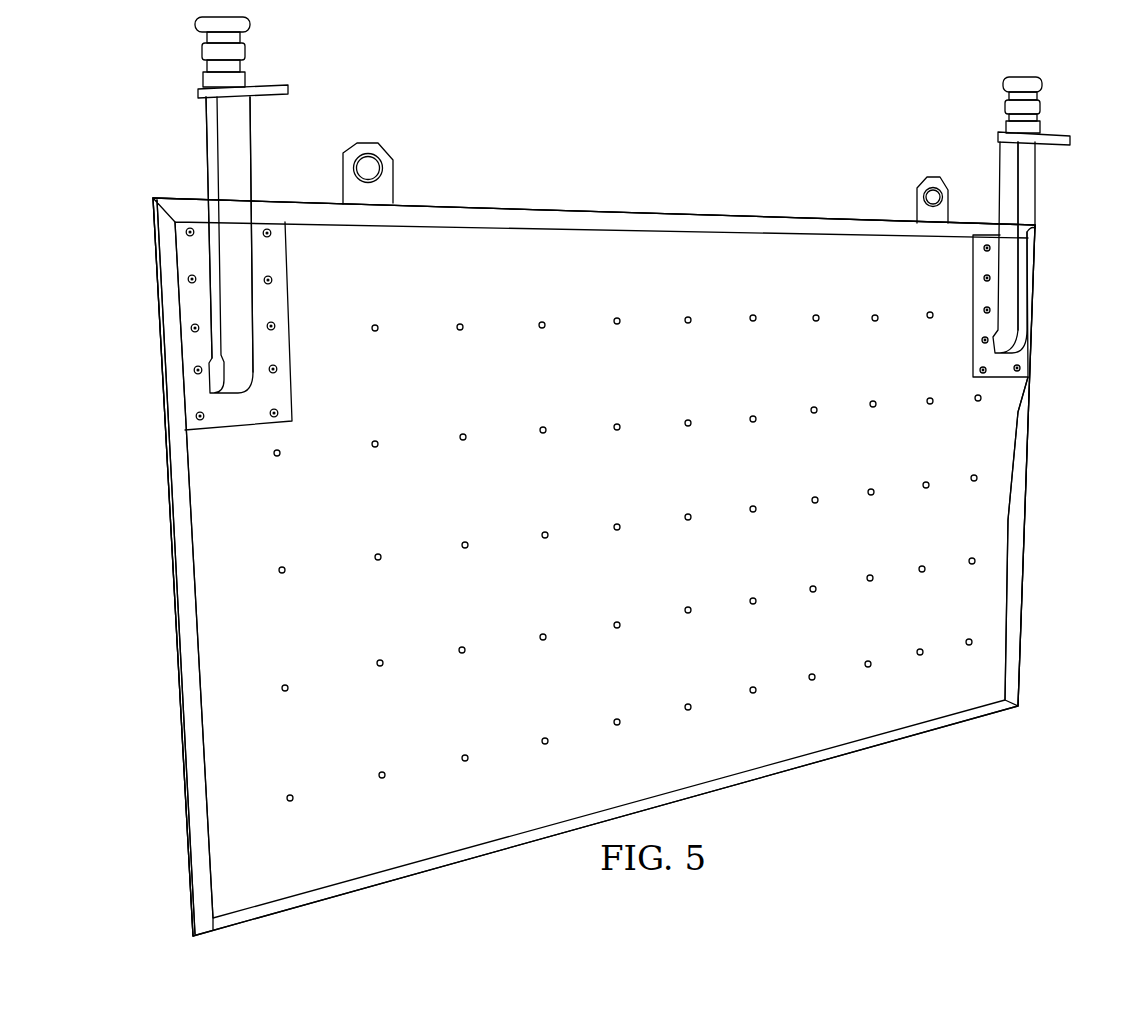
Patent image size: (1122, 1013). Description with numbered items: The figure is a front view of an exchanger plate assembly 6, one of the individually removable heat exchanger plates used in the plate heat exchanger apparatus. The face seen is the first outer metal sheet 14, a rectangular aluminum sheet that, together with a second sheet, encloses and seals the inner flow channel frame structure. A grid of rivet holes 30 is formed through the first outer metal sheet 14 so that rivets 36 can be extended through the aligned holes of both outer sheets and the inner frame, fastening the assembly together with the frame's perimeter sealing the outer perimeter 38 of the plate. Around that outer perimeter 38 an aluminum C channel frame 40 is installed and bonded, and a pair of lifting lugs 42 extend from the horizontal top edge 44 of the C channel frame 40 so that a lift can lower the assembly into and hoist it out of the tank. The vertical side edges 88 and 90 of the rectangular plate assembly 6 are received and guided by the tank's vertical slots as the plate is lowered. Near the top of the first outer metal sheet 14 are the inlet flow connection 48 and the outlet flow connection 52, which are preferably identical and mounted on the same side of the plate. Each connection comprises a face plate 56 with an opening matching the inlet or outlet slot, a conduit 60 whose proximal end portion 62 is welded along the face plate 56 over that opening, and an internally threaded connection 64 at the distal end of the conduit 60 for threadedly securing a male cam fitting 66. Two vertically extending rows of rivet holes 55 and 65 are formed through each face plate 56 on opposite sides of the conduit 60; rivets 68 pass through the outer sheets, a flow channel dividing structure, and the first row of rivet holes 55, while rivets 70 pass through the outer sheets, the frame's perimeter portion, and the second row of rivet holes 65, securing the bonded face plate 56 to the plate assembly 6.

The exchanger plate assembly 6 is at (728, 120).
The first outer metal sheet 14 is at (524, 238).
The rivet holes 30 is at (613, 560).
The rivets 36 is at (378, 326).
The outer perimeter 38 is at (183, 612).
The C channel frame 40 is at (171, 532).
The lifting lugs 42 is at (365, 142).
The horizontal top edge 44 is at (458, 212).
The inlet flow connection 48 is at (1020, 246).
The outlet flow connection 52 is at (210, 170).
The rivet holes 55 is at (641, 323).
The face plate 56 is at (282, 250).
The conduit 60 is at (208, 124).
The proximal end portion 62 is at (1028, 300).
The internally threaded connection 64 is at (250, 90).
The rivet holes 65 is at (132, 325).
The male cam fitting 66 is at (197, 25).
The rivets 68 is at (271, 281).
The rivets 70 is at (187, 233).
The vertical side edge 88 is at (1020, 576).
The vertical side edge 90 is at (187, 681).